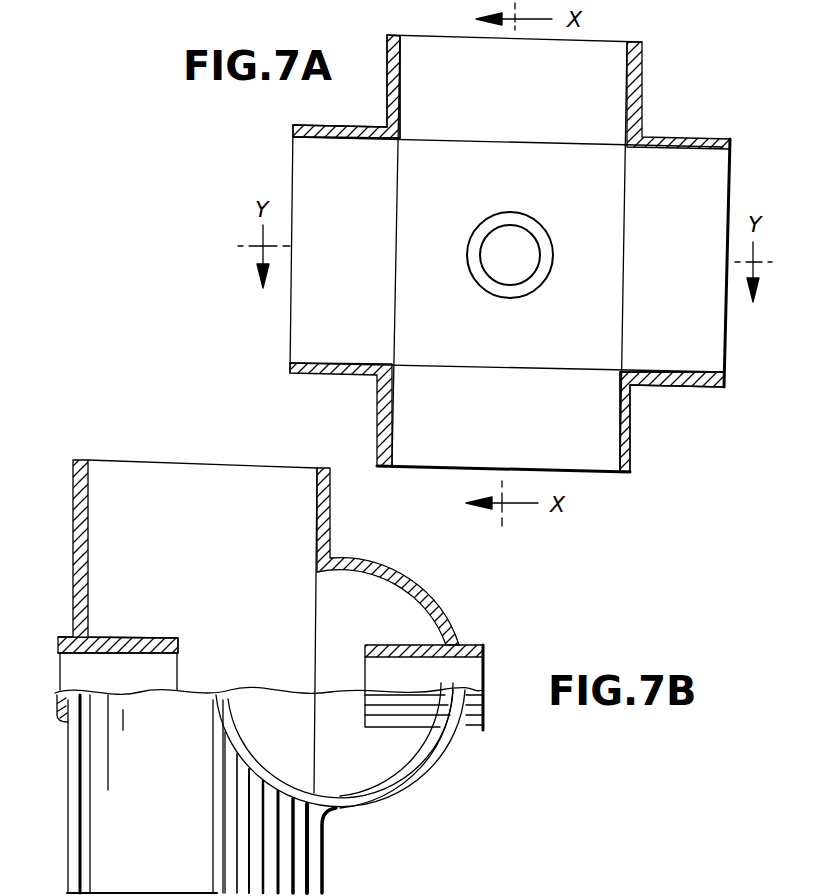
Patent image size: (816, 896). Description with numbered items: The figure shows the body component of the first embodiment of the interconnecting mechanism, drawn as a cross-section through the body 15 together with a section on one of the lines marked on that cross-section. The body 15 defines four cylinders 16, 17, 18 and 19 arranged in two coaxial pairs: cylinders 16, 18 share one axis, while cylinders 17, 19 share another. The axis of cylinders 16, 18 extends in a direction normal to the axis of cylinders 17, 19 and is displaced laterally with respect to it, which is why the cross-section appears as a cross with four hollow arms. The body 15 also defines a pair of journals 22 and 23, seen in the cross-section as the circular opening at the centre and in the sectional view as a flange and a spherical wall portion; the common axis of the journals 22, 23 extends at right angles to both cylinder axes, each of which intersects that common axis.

In FIG. 7A, the body 15 is at (290, 366).
In FIG. 7B, the body 15 is at (455, 762).
In FIG. 7A, the cylinder 16 is at (395, 96).
In FIG. 7B, the cylinder 16 is at (318, 508).
In FIG. 7A, the cylinder 17 is at (704, 372).
In FIG. 7B, the cylinder 17 is at (409, 792).
In FIG. 7A, the cylinder 18 is at (634, 440).
In FIG. 7A, the cylinder 19 is at (332, 146).
In FIG. 7B, the cylinder 19 is at (416, 758).
In FIG. 7A, the journal 22 is at (528, 216).
In FIG. 7B, the journal 22 is at (128, 637).
In FIG. 7B, the journal 23 is at (417, 645).